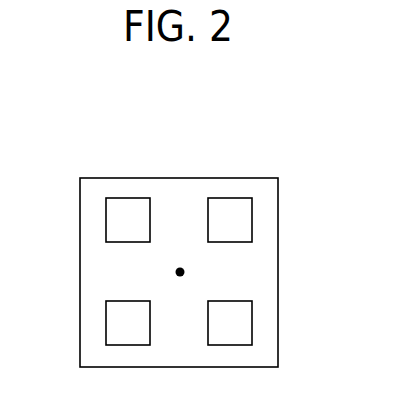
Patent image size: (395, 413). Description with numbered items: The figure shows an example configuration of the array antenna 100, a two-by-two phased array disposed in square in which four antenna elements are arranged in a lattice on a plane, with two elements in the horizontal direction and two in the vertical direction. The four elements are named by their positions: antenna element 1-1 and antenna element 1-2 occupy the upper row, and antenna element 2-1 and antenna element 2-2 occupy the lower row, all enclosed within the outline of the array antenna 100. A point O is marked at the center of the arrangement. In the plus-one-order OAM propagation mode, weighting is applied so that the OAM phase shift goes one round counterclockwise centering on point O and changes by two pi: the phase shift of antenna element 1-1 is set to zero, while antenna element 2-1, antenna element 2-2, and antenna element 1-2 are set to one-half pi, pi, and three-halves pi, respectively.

The array antenna 100 is at (203, 118).
The antenna element 1-1 is at (131, 198).
The antenna element 1-2 is at (232, 198).
The antenna element 2-1 is at (106, 318).
The antenna element 2-2 is at (252, 318).
The point O is at (193, 285).